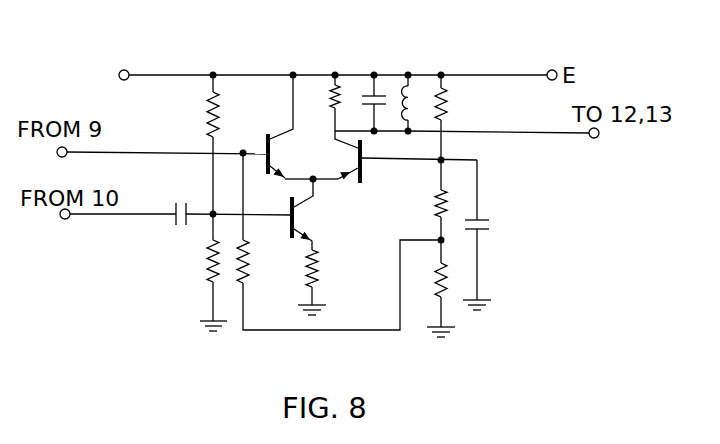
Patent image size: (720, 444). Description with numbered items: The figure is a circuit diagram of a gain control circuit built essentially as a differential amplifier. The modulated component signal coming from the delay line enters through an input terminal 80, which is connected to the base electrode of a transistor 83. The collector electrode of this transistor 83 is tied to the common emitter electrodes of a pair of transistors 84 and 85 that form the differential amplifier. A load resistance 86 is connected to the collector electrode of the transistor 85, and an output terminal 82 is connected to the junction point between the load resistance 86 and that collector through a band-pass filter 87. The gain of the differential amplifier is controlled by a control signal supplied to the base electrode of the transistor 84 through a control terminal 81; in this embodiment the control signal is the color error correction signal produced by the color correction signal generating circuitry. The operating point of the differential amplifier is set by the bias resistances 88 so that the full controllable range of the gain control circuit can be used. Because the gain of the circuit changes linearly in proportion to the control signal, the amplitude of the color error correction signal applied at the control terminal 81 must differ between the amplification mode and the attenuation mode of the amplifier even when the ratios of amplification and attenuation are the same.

The input terminal 80 is at (69, 219).
The control terminal 81 is at (66, 157).
The output terminal 82 is at (588, 140).
The transistor 83 is at (297, 208).
The transistor 84 is at (283, 131).
The transistor 85 is at (345, 182).
The load resistance 86 is at (331, 94).
The band-pass filter 87 is at (392, 90).
The bias resistances 88 is at (440, 167).